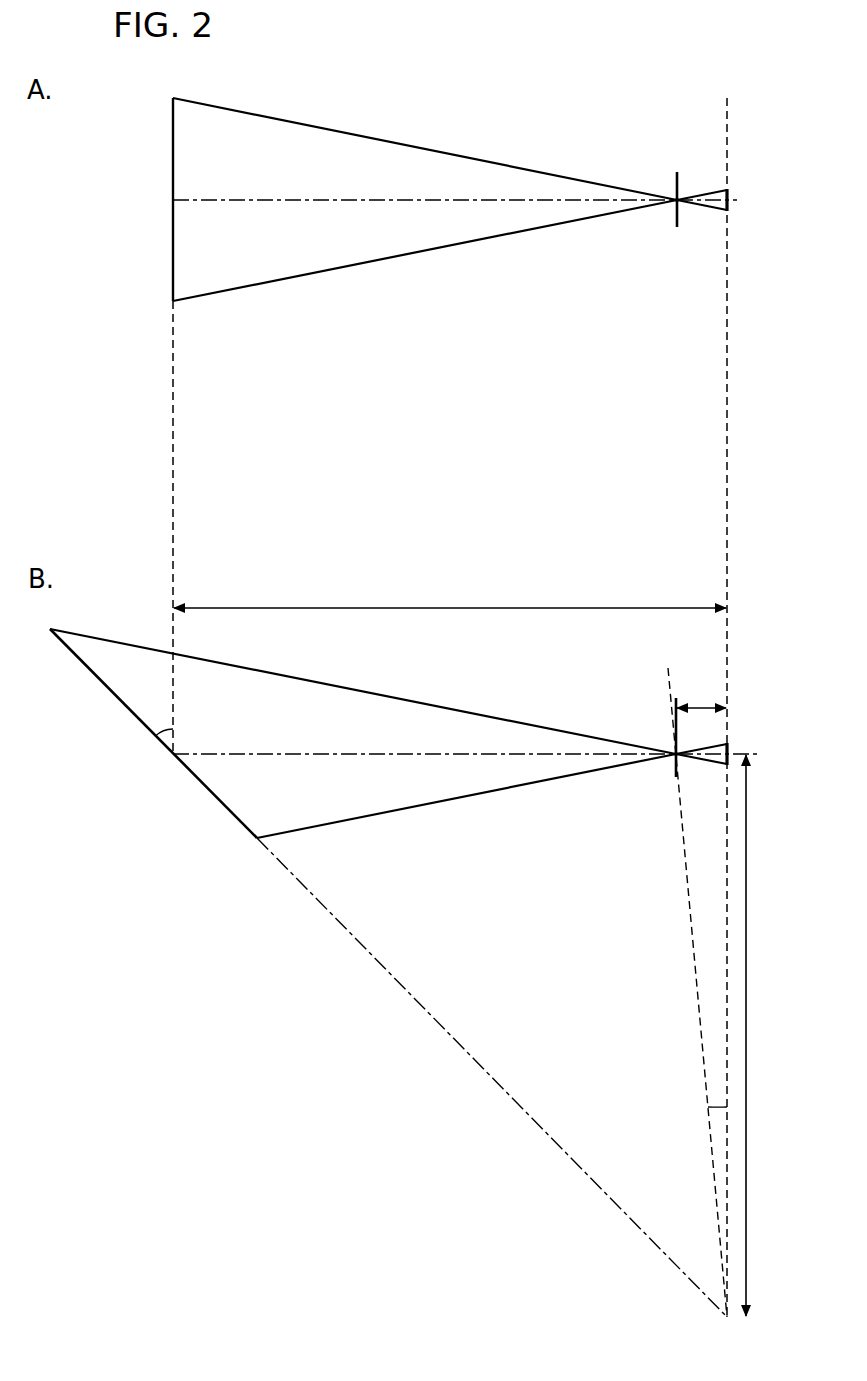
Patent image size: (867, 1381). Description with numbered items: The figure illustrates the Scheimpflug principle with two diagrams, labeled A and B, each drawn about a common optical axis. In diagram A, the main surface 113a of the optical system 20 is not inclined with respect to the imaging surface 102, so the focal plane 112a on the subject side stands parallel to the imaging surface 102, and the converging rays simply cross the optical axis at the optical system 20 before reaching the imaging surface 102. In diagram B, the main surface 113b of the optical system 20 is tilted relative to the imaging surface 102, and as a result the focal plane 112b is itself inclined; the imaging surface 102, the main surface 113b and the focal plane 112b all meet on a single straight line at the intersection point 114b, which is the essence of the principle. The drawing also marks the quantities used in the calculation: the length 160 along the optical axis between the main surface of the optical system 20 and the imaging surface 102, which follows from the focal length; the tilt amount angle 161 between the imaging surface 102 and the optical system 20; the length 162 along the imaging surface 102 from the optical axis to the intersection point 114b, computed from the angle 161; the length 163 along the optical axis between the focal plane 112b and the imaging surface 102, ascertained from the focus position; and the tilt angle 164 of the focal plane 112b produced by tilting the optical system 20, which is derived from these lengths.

The optical system 20 is at (676, 200).
The imaging surface 102 is at (730, 202).
The focal plane 112a is at (173, 272).
The focal plane 112b is at (212, 798).
The main surface of the optical system 113a is at (675, 204).
The main surface of the optical system 113b is at (675, 776).
The intersection point 114b is at (725, 1316).
The length 160 is at (701, 690).
The tilt amount angle 161 is at (713, 1107).
The length 162 is at (770, 1035).
The length 163 is at (450, 593).
The tilt angle 164 is at (163, 729).